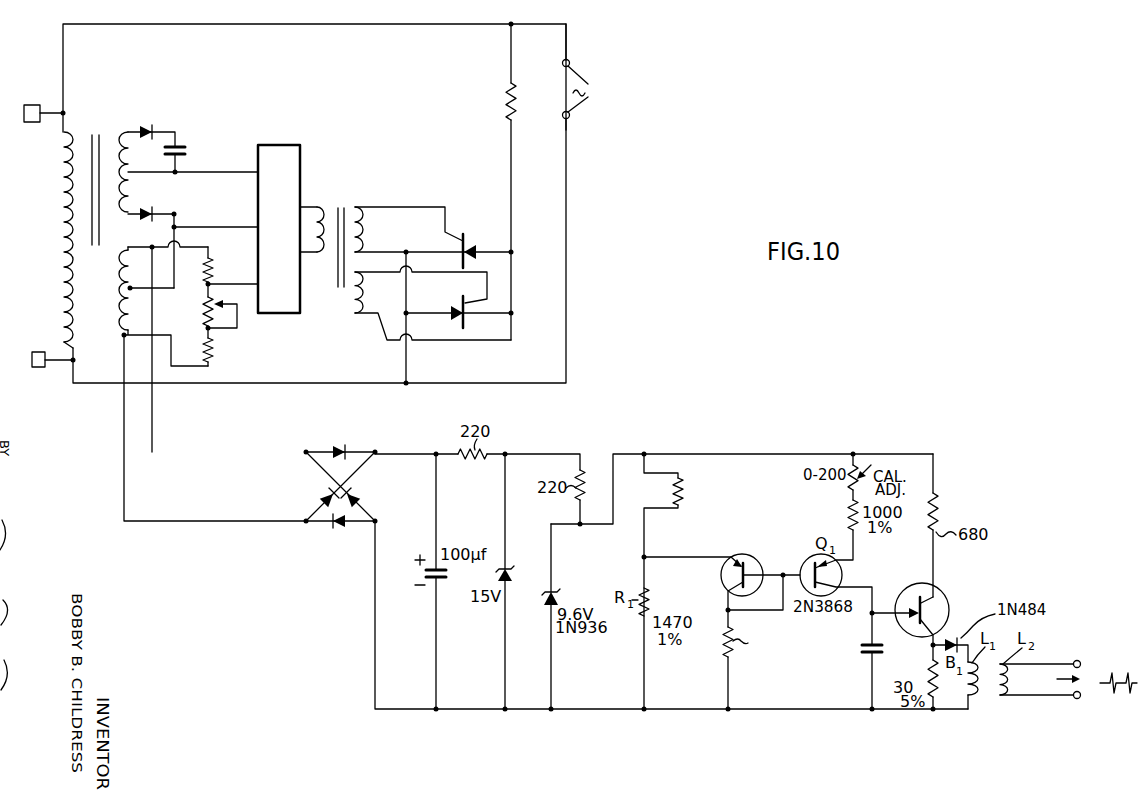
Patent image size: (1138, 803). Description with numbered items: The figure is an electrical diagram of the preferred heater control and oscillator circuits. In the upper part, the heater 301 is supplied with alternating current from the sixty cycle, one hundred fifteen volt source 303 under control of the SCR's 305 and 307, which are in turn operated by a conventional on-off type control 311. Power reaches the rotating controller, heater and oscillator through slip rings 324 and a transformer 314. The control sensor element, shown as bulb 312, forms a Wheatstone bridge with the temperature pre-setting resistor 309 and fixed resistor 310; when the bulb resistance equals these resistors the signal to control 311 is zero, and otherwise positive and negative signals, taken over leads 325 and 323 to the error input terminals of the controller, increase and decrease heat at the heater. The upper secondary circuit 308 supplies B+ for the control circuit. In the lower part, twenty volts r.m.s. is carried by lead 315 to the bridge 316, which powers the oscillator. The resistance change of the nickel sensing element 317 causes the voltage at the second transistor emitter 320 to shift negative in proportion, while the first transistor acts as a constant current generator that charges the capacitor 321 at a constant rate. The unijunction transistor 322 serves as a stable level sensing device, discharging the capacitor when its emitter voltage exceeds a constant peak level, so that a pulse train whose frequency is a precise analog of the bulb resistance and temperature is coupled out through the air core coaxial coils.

The heater 301 is at (505, 105).
The 60 cycle 115 volt source 303 is at (626, 95).
The SCR 305 is at (485, 227).
The SCR 307 is at (463, 328).
The upper secondary circuit 308 is at (135, 145).
The temperature pre-setting resistor 309 is at (204, 310).
The fixed resistor 310 is at (214, 355).
The on-off type control 311 is at (310, 163).
The control sensor element 312 is at (243, 255).
The transformer 314 is at (120, 360).
The conductor 315 is at (152, 399).
The bridge 316 is at (398, 494).
The nickel sensing element 317 is at (689, 582).
The Q2 emitter 320 is at (722, 573).
The capacitor C1 321 is at (862, 645).
The unijunction transistor Q3 322 is at (912, 595).
The lead 323 is at (233, 227).
The slip rings 324 is at (33, 99).
The lead 325 is at (245, 288).